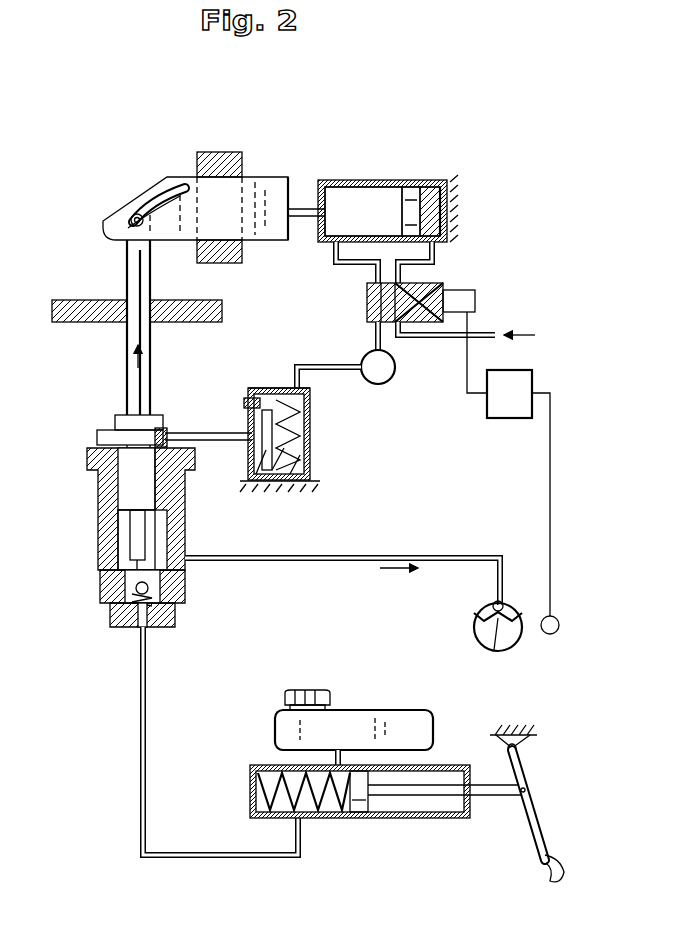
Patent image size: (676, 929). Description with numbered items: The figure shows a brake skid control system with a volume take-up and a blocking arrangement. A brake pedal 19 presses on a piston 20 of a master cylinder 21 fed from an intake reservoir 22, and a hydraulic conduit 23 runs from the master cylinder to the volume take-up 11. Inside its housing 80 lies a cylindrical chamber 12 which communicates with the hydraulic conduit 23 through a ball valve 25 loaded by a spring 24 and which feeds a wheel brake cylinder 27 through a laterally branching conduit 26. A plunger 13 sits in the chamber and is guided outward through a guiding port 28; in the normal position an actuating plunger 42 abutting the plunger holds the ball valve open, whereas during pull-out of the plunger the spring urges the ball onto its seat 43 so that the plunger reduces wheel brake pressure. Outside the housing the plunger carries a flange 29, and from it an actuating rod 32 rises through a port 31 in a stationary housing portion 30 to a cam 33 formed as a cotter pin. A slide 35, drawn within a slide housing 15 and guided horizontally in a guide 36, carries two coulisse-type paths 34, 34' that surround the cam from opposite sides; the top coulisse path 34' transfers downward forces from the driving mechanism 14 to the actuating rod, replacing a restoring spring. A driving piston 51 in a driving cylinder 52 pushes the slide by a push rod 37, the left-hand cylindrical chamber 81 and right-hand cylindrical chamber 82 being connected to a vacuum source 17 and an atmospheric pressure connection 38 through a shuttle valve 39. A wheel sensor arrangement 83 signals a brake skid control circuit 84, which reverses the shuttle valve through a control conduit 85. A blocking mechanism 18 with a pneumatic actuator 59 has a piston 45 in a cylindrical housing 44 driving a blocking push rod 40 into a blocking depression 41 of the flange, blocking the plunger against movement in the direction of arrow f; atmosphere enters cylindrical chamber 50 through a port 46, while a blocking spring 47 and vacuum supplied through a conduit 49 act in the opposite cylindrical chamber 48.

The volume take-up 11 is at (94, 487).
The cylindrical chamber 12 is at (125, 532).
The plunger 13 is at (134, 547).
The driving mechanism 14 is at (368, 178).
The housing 15 is at (185, 177).
The vacuum source 17 is at (395, 367).
The blocking mechanism 18 is at (228, 413).
The brake pedal 19 is at (540, 860).
The piston 20 is at (360, 812).
The master cylinder 21 is at (425, 818).
The intake reservoir 22 is at (400, 722).
The hydraulic conduit 23 is at (140, 690).
The spring 24 is at (122, 615).
The ball valve 25 is at (117, 598).
The laterally branching conduit 26 is at (345, 562).
The wheel brake cylinder 27 is at (495, 651).
The guiding port 28 is at (170, 472).
The flange 29 is at (105, 442).
The stationary housing portion 30 is at (72, 310).
The port 31 is at (118, 310).
The actuating rod 32 is at (130, 372).
The cam 33 is at (130, 220).
The coulisse-type path 34 is at (157, 179).
The top coulisse path 34' is at (141, 193).
The slide 35 is at (280, 242).
The guide 36 is at (240, 165).
The push rod 37 is at (305, 210).
The atmospheric pressure connection 38 is at (490, 333).
The shuttle valve 39 is at (370, 312).
The blocking push rod 40 is at (215, 435).
The blocking depression 41 is at (165, 430).
The actuating plunger 42 is at (128, 578).
The seat 43 is at (150, 585).
The cylindrical housing 44 is at (306, 442).
The piston 45 is at (286, 470).
The port 46 is at (250, 400).
The blocking spring 47 is at (300, 465).
The cylindrical chamber 48 is at (300, 472).
The conduit 49 is at (338, 372).
The cylindrical chamber 50 is at (262, 470).
The driving piston 51 is at (428, 198).
The driving cylinder 52 is at (410, 195).
The pneumatic actuator 59 is at (280, 386).
The housing 80 is at (175, 508).
The left-hand cylindrical chamber 81 is at (340, 195).
The right-hand cylindrical chamber 82 is at (438, 183).
The wheel sensor arrangement 83 is at (552, 636).
The brake skid control circuit 84 is at (517, 412).
The control conduit 85 is at (467, 395).
The arrow f is at (142, 356).